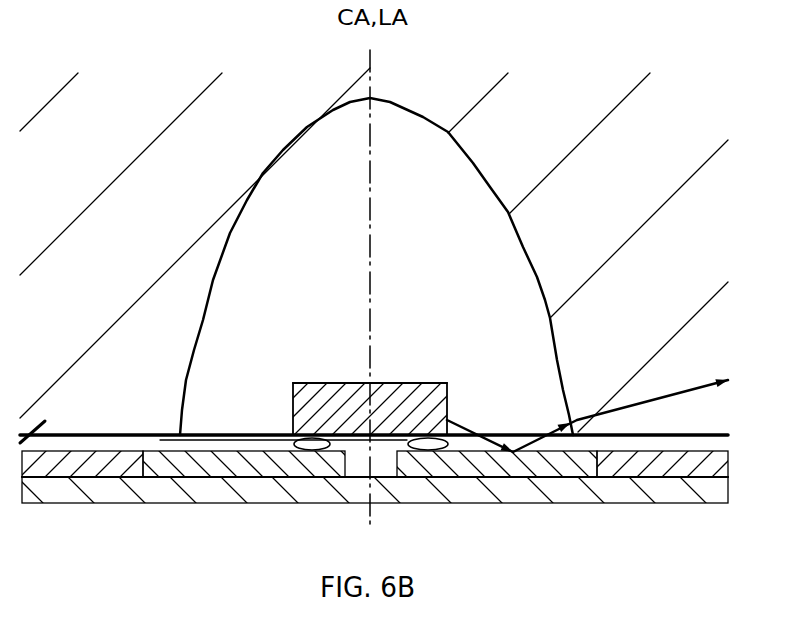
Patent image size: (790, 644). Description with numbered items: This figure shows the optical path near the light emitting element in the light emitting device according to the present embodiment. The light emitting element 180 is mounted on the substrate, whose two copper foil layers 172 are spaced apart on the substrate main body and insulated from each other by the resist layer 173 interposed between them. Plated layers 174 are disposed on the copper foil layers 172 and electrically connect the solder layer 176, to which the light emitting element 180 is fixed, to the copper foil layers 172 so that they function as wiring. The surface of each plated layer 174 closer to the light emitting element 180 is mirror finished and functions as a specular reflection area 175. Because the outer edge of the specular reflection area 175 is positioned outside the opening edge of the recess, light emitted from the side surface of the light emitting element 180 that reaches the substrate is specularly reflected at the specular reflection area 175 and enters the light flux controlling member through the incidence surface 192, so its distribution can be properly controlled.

The copper foil layer 172 is at (95, 494).
The resist layer 173 is at (397, 493).
The plated layer 174 is at (402, 467).
The specular reflection area 175 is at (275, 447).
The solder layer 176 is at (423, 383).
The light emitting element 180 is at (334, 407).
The incidence surface 192 is at (186, 377).